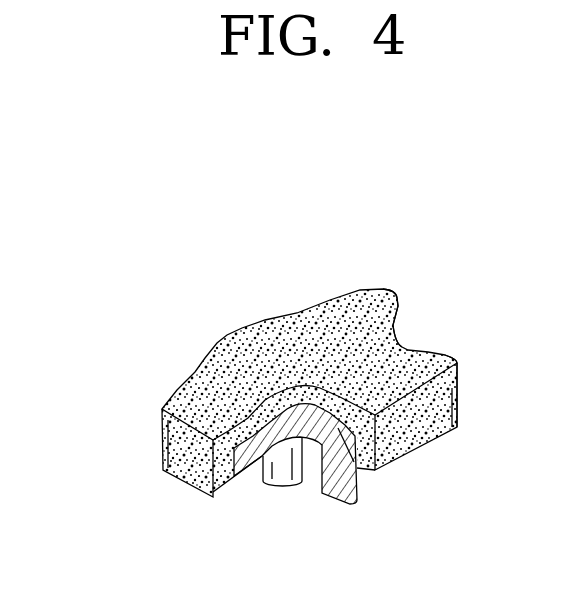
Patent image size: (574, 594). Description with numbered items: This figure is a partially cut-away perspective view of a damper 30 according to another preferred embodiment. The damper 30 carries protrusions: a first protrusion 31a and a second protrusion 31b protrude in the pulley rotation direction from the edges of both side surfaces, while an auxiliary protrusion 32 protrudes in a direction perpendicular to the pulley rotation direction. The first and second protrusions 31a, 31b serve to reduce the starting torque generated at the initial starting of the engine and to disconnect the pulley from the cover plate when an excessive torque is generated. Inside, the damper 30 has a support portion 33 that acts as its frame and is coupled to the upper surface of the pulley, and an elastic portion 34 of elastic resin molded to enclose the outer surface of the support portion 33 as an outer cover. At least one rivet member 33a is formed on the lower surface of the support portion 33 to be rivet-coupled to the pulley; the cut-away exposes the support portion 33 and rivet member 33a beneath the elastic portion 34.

The damper 30 is at (290, 394).
The first protrusion 31a is at (392, 296).
The second protrusion 31b is at (457, 363).
The auxiliary protrusion 32 is at (243, 330).
The support portion 33 is at (252, 473).
The rivet member 33a is at (343, 500).
The elastic portion 34 is at (229, 490).